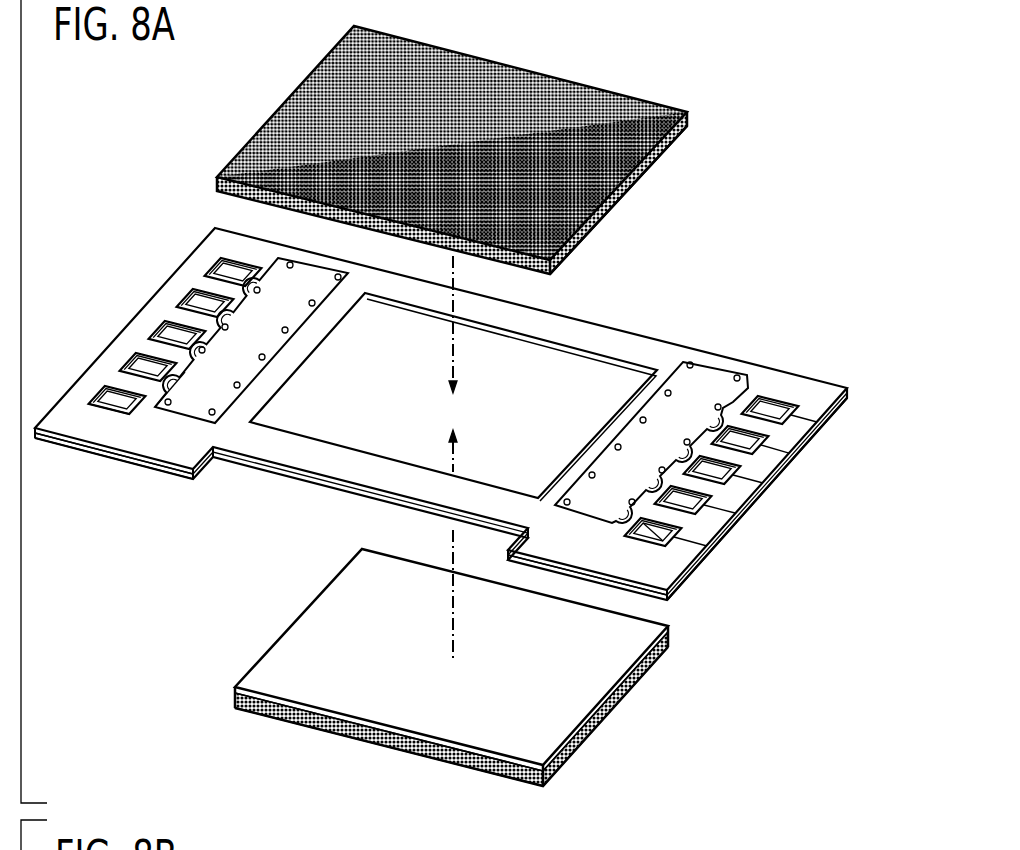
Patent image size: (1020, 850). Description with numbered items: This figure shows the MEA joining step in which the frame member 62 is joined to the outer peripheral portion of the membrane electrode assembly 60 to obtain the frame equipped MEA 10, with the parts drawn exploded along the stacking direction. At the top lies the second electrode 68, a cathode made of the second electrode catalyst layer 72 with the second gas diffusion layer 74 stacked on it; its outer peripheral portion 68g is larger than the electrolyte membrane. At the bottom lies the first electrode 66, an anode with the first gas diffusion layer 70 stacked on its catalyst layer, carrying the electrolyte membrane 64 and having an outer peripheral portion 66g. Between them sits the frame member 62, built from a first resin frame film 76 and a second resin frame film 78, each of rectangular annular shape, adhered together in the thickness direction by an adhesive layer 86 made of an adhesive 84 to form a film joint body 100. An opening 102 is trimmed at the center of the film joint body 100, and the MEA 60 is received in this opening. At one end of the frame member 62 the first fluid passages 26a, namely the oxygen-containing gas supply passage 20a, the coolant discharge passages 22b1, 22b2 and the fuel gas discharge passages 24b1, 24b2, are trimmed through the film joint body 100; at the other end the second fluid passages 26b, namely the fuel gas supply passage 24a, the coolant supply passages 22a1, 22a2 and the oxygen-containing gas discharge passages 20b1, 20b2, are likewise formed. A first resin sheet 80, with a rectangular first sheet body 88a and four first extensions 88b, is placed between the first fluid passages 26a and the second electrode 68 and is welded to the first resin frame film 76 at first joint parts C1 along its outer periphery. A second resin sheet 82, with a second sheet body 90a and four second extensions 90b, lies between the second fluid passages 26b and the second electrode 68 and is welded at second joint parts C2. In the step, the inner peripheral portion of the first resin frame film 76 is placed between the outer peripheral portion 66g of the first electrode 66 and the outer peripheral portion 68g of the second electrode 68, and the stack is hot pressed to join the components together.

The frame equipped MEA 10 is at (445, 433).
The membrane electrode assembly 60 is at (473, 147).
The frame member 62 is at (779, 353).
The electrolyte membrane 64 is at (578, 708).
The first electrode 66 is at (490, 678).
The outer peripheral portion of the first electrode 66g is at (607, 718).
The second electrode 68 is at (730, 140).
The outer peripheral portion of the second electrode 68g is at (611, 206).
The first gas diffusion layer 70 is at (623, 703).
The second electrode catalyst layer 72 is at (642, 181).
The second gas diffusion layer 74 is at (620, 153).
The first resin frame film 76 is at (285, 450).
The second resin frame film 78 is at (327, 478).
The first resin sheet 80 is at (655, 408).
The second resin sheet 82 is at (263, 387).
The adhesive 84 is at (68, 440).
The adhesive layer 86 is at (114, 489).
The first sheet body 88a is at (642, 438).
The first extension 88b is at (653, 528).
The second sheet body 90a is at (182, 396).
The second extension 90b is at (120, 404).
The film joint body 100 is at (821, 370).
The opening 102 is at (453, 384).
The oxygen-containing gas supply passage 20a is at (744, 484).
The oxygen-containing gas discharge passage 20b1 is at (233, 268).
The oxygen-containing gas discharge passage 20b2 is at (92, 418).
The coolant supply passage 22a1 is at (205, 300).
The coolant supply passage 22a2 is at (148, 364).
The coolant discharge passage 22b1 is at (769, 453).
The coolant discharge passage 22b2 is at (712, 514).
The fuel gas supply passage 24a is at (177, 332).
The fuel gas discharge passage 24b1 is at (797, 422).
The fuel gas discharge passage 24b2 is at (686, 581).
The first fluid passages 26a is at (631, 561).
The second fluid passages 26b is at (123, 432).
The first joint part C1 is at (717, 403).
The second joint part C2 is at (290, 325).